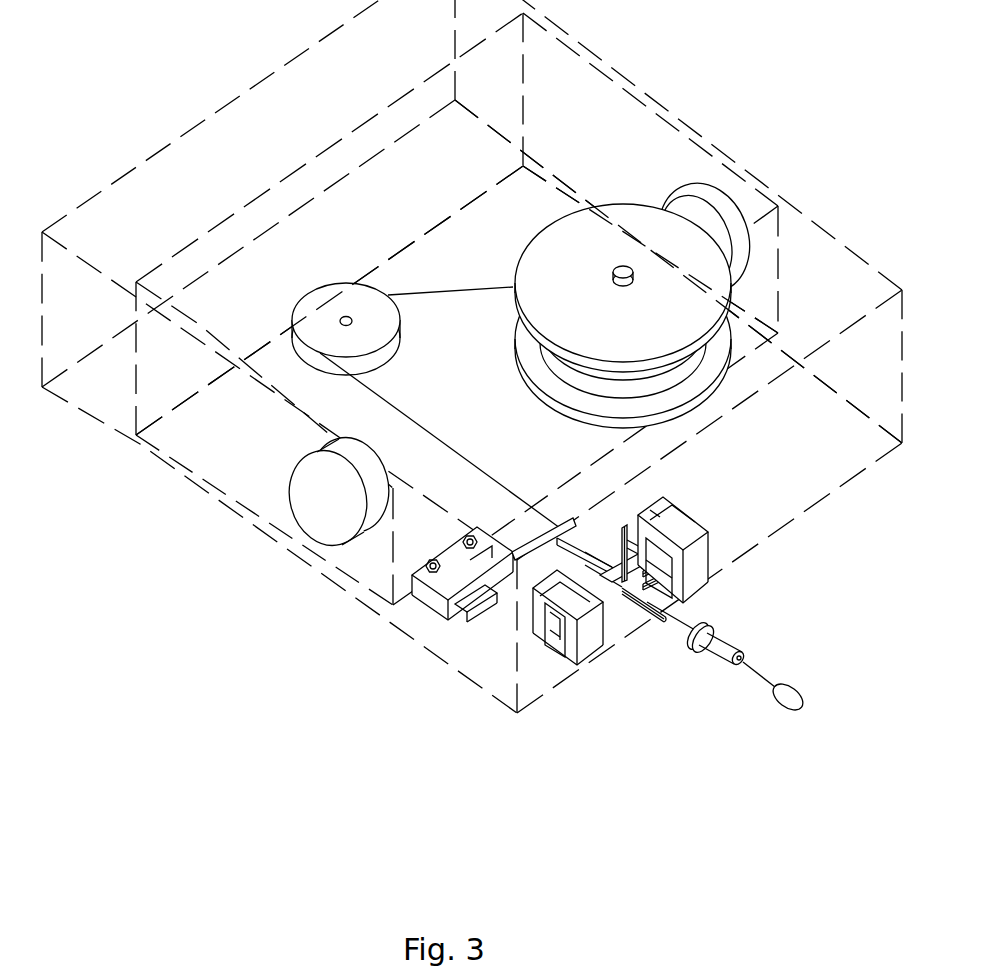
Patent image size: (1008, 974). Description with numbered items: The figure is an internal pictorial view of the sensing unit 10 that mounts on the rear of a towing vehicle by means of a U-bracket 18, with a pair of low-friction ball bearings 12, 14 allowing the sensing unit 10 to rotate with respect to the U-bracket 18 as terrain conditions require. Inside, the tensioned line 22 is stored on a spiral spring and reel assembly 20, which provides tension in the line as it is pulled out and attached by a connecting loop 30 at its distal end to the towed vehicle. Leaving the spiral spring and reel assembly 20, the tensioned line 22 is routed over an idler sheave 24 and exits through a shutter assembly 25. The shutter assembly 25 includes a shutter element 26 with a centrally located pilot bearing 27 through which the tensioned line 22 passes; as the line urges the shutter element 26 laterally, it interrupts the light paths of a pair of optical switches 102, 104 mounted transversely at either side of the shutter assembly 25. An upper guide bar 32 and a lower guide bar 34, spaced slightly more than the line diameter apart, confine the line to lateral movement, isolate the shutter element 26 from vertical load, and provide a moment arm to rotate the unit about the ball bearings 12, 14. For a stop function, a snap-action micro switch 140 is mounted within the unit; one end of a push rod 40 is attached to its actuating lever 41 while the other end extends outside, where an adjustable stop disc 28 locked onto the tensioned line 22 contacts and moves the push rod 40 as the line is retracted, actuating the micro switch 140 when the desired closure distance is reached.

The sensing unit 10 is at (484, 309).
The ball bearing 12 is at (695, 221).
The ball bearing 14 is at (320, 486).
The U-bracket 18 is at (472, 356).
The spiral spring and reel assembly 20 is at (618, 308).
The tensioned line 22 is at (551, 512).
The idler sheave 24 is at (337, 313).
The shutter assembly 25 is at (716, 473).
The shutter element 26 is at (613, 499).
The pilot bearing 27 is at (612, 529).
The adjustable stop disc 28 is at (714, 670).
The connecting loop 30 is at (792, 753).
The upper guide bar 32 is at (715, 553).
The lower guide bar 34 is at (715, 581).
The push rod 40 is at (652, 634).
The actuating lever 41 is at (529, 528).
The optical switch 102 is at (555, 664).
The optical switch 104 is at (706, 541).
The micro switch 140 is at (422, 597).